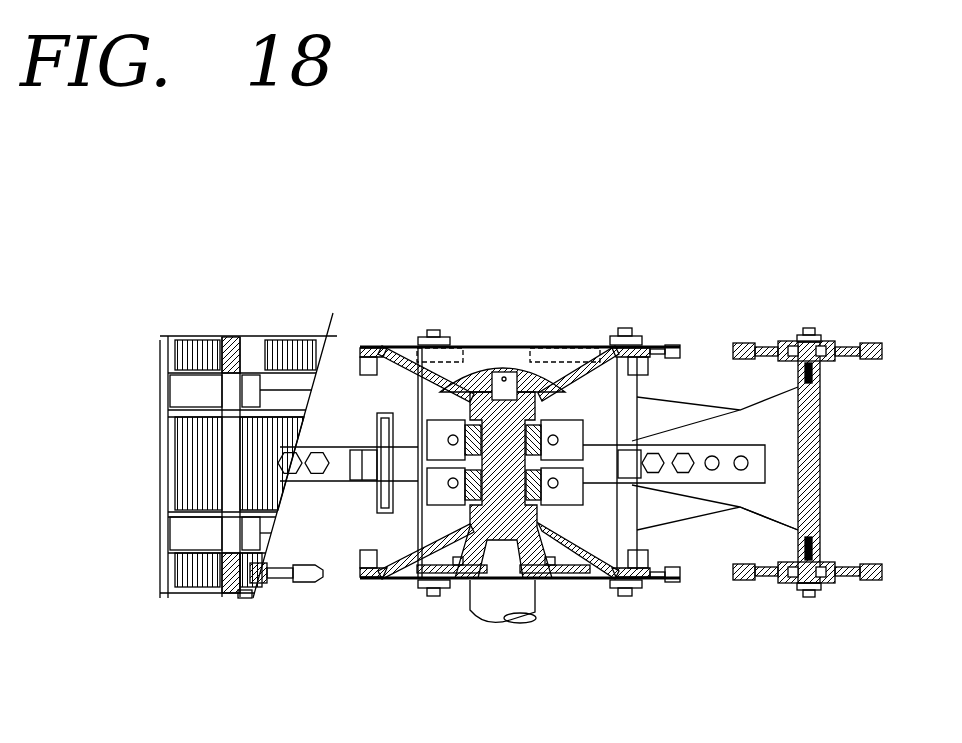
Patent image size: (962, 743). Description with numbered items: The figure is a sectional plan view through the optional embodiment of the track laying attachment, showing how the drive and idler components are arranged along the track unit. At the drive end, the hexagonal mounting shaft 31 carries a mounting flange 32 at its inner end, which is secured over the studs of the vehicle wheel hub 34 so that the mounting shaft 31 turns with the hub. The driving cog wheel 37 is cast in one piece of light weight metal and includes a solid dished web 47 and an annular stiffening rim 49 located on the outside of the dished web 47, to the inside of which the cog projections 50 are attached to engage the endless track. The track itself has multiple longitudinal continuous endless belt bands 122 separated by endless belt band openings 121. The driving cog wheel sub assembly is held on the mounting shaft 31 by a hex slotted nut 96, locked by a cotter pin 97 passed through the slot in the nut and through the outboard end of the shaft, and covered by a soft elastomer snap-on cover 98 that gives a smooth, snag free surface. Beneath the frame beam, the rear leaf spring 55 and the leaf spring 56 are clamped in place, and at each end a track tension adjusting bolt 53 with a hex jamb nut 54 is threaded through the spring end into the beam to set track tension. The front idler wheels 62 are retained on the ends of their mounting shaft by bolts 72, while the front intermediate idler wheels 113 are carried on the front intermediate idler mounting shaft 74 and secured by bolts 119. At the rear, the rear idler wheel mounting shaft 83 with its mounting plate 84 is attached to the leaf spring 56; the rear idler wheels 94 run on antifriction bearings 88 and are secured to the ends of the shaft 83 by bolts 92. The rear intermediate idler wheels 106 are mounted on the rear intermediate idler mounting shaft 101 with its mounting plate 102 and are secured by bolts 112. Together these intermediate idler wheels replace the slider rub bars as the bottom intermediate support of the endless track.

The mounting shaft 31 is at (508, 370).
The mounting flange 32 is at (447, 582).
The wheel hub 34 is at (503, 624).
The driving cog wheel 37 is at (562, 347).
The solid dished web 47 is at (568, 580).
The annular stiffening rim 49 is at (638, 345).
The cog projections 50 is at (643, 582).
The tension adjusting bolt 53 is at (402, 447).
The hex jamb nut 54 is at (362, 565).
The rear leaf spring 55 is at (343, 447).
The leaf spring 56 is at (388, 413).
The front idler wheels 62 is at (283, 590).
The bolts 72 is at (245, 598).
The front intermediate idler mounting shaft 74 is at (405, 565).
The rear idler wheel mounting shaft 83 is at (822, 484).
The mounting plate 84 is at (765, 522).
The antifriction bearings 88 is at (827, 342).
The bolts 92 is at (807, 328).
The rear idler wheels 94 is at (867, 342).
The hex slotted nut 96 is at (480, 370).
The cotter pin 97 is at (528, 400).
The snap-on cover 98 is at (496, 372).
The rear intermediate idler mounting shaft 101 is at (627, 533).
The mounting plate 102 is at (700, 395).
The rear intermediate idler wheels 106 is at (673, 345).
The bolts 112 is at (626, 597).
The front intermediate idler wheels 113 is at (413, 590).
The bolts 119 is at (427, 580).
The endless belt band openings 121 is at (163, 396).
The endless belt bands 122 is at (213, 336).